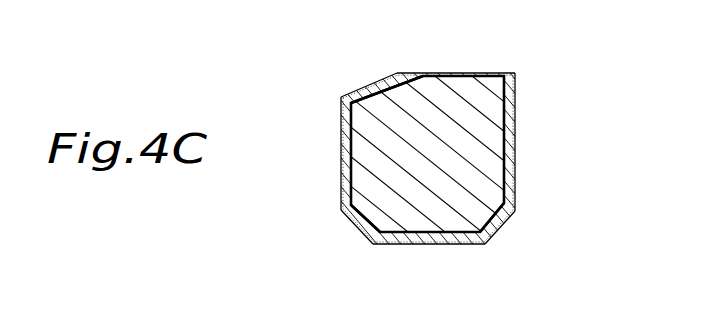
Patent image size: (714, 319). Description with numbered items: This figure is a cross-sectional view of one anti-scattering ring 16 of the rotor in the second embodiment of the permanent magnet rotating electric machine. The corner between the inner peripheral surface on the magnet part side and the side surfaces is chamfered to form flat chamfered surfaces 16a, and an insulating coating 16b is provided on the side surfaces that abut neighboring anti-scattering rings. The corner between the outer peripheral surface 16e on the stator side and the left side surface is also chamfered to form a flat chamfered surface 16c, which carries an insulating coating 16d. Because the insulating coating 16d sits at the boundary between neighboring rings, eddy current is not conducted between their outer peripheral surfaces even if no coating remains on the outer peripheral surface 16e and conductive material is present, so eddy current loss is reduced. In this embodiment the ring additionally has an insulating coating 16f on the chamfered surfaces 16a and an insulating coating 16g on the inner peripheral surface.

The anti-scattering ring 16 is at (443, 215).
The chamfered surface 16a is at (363, 230).
The insulating coating 16b is at (346, 157).
The chamfered surface 16c is at (382, 80).
The insulating coating 16d is at (370, 93).
The outer peripheral surface 16e is at (458, 73).
The insulating coating 16f is at (355, 215).
The insulating coating 16g is at (403, 240).